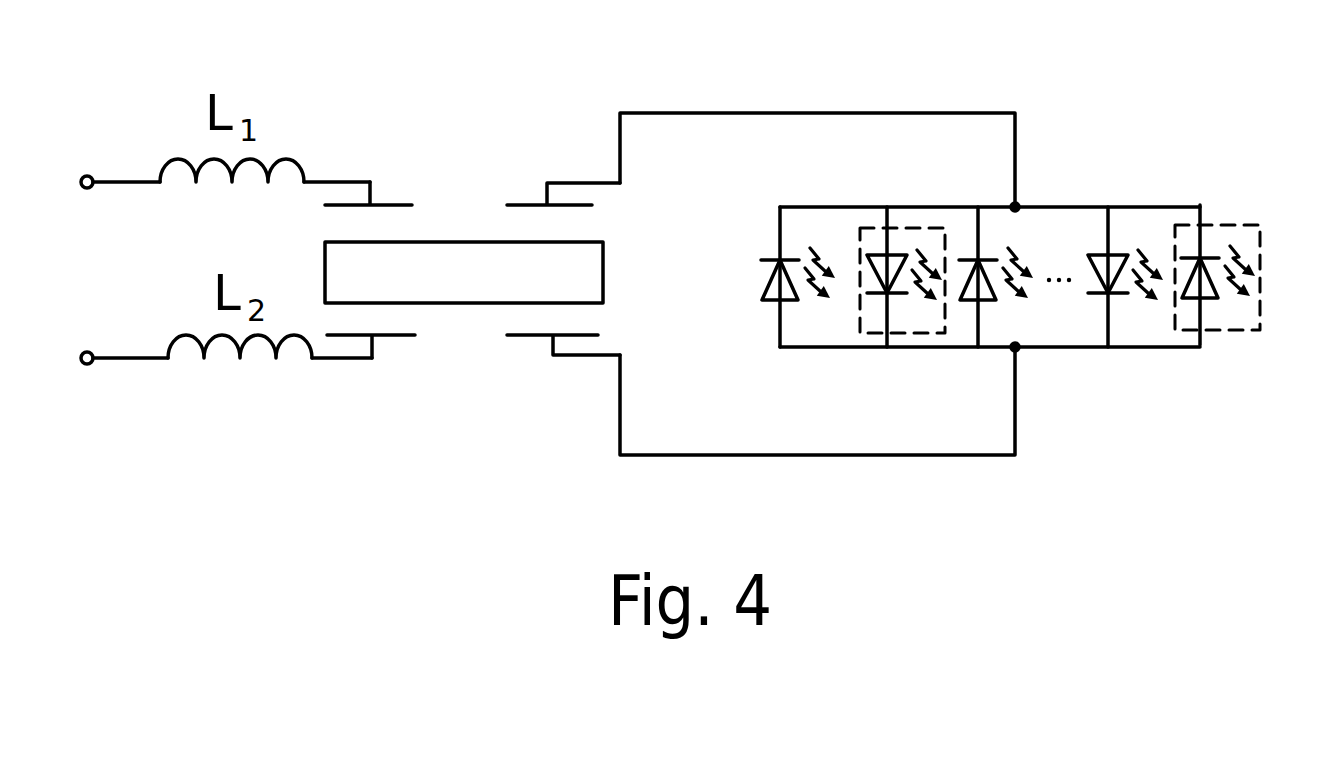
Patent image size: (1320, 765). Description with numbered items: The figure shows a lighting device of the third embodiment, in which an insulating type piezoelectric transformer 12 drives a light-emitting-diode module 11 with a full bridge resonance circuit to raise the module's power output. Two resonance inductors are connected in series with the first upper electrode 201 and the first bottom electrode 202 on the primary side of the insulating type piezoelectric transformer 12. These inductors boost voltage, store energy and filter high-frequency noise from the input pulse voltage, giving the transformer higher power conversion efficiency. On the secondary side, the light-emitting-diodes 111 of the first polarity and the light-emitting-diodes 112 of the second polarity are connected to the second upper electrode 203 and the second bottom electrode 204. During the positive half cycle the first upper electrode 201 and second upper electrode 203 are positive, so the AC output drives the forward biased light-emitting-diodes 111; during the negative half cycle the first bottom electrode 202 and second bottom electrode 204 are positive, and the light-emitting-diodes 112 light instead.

The light-emitting-diode module 11 is at (1034, 183).
The light-emitting-diodes of the first polarity 111 is at (908, 226).
The light-emitting-diodes of the second polarity 112 is at (1218, 223).
The insulating type piezoelectric transformer 12 is at (453, 192).
The first upper electrode 201 is at (405, 205).
The first bottom electrode 202 is at (403, 337).
The second upper electrode 203 is at (517, 205).
The second bottom electrode 204 is at (525, 338).